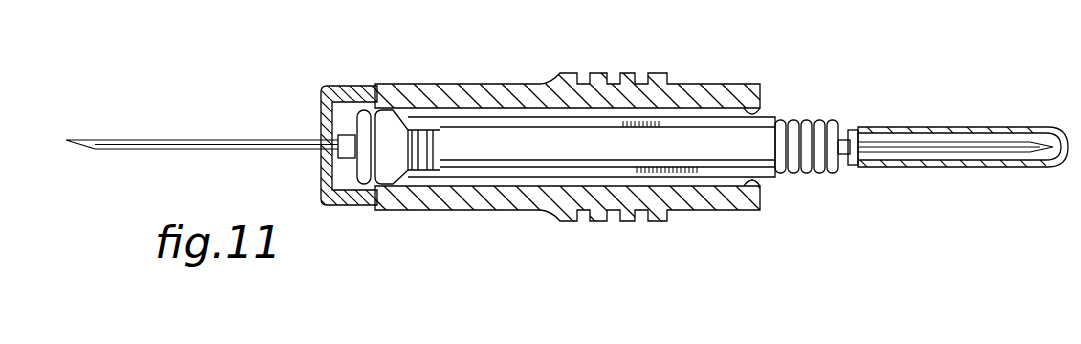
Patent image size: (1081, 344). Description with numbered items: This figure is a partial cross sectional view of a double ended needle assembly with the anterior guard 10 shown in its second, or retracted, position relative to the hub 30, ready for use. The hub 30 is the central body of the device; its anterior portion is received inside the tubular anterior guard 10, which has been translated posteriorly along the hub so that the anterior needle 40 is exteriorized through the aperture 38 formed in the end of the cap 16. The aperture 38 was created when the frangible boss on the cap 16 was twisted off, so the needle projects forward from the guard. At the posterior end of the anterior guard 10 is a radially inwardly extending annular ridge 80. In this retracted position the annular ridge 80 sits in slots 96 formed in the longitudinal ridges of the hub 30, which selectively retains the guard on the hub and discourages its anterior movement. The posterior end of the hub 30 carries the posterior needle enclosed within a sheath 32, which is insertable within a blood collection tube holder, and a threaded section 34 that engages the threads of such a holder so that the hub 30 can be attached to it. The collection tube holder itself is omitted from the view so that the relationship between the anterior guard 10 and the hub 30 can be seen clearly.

The anterior guard 10 is at (497, 84).
The cap 16 is at (351, 90).
The hub 30 is at (746, 147).
The sheath 32 is at (990, 168).
The threaded section 34 is at (815, 173).
The aperture 38 is at (322, 140).
The anterior needle 40 is at (236, 140).
The annular ridge 80 is at (767, 179).
The slots 96 is at (750, 110).